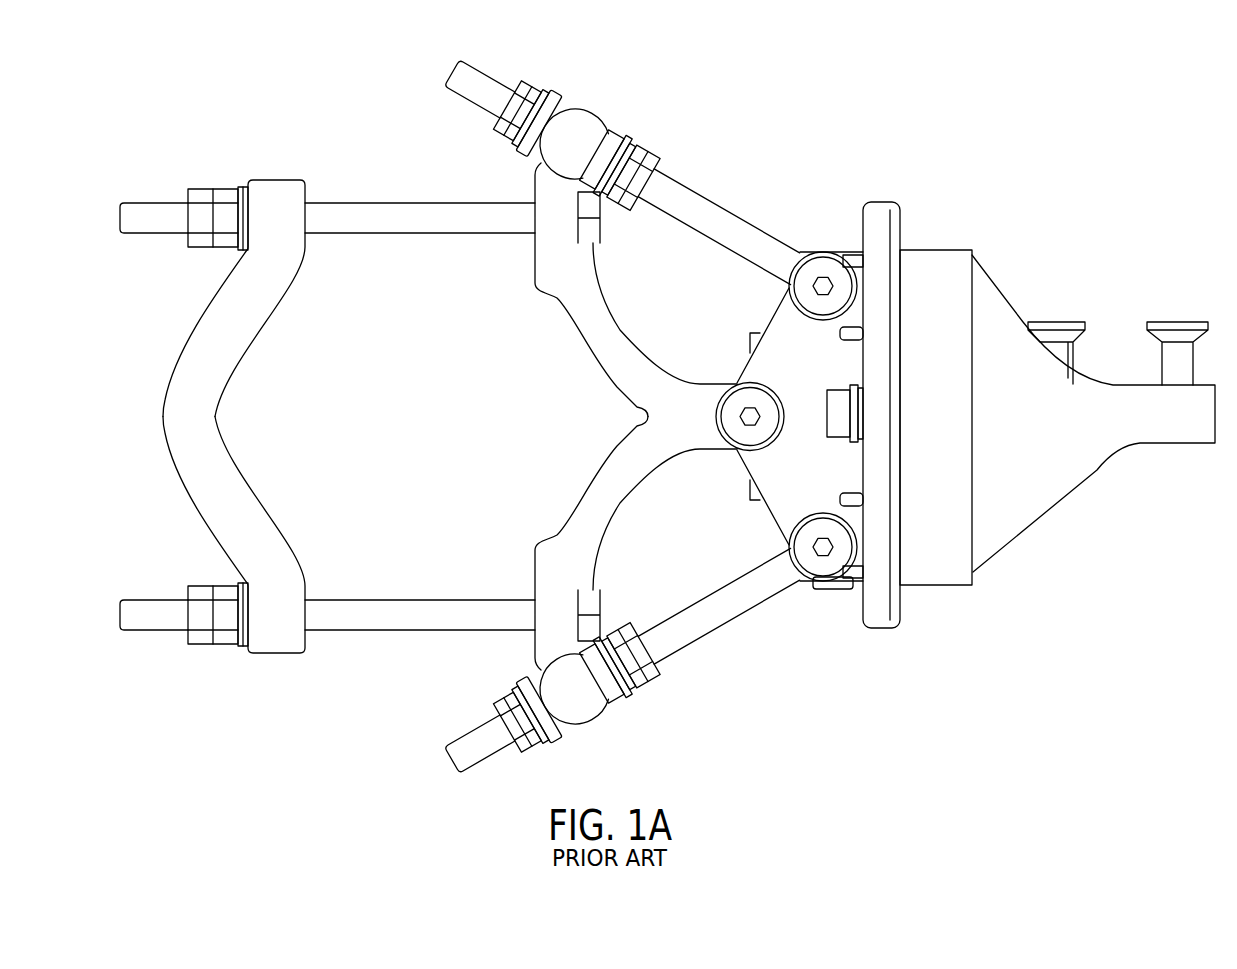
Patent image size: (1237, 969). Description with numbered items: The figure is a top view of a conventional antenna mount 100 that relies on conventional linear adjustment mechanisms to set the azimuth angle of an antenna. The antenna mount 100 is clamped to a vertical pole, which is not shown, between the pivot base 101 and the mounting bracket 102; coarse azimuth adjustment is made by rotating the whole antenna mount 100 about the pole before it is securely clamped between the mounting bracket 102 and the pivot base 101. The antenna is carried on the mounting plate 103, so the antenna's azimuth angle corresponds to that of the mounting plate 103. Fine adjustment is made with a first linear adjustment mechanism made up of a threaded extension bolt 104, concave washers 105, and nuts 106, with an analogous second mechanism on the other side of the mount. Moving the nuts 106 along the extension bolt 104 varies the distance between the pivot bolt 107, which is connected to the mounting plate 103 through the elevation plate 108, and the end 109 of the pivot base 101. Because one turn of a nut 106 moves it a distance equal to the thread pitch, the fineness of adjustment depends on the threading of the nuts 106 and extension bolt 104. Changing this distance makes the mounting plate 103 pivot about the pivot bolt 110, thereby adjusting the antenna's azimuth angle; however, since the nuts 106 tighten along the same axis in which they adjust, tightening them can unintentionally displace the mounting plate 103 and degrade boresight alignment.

The antenna mount 100 is at (656, 766).
The pivot base 101 is at (565, 510).
The mounting bracket 102 is at (218, 415).
The mounting plate 103 is at (1113, 385).
The threaded extension bolt 104 is at (777, 240).
The concave washers 105 is at (563, 93).
The nuts 106 is at (525, 82).
The pivot bolt 107 is at (815, 278).
The elevation plate 108 is at (943, 248).
The end of pivot base 109 is at (552, 157).
The pivot bolt 110 is at (740, 405).